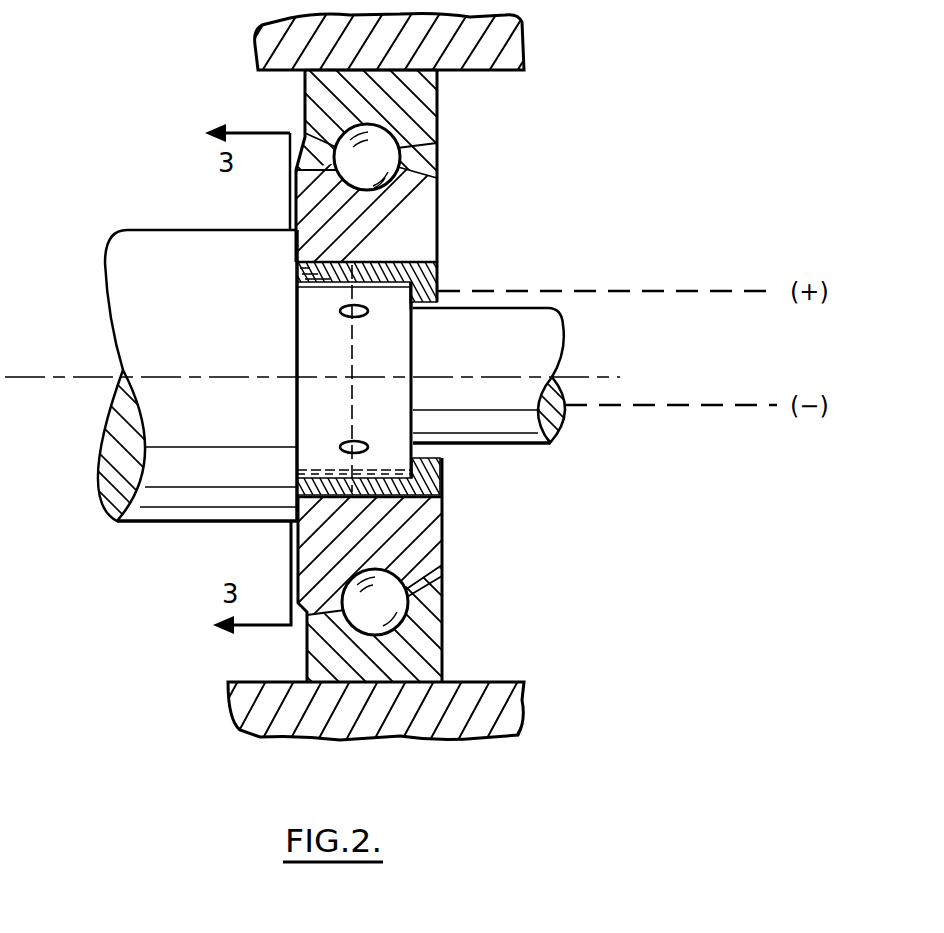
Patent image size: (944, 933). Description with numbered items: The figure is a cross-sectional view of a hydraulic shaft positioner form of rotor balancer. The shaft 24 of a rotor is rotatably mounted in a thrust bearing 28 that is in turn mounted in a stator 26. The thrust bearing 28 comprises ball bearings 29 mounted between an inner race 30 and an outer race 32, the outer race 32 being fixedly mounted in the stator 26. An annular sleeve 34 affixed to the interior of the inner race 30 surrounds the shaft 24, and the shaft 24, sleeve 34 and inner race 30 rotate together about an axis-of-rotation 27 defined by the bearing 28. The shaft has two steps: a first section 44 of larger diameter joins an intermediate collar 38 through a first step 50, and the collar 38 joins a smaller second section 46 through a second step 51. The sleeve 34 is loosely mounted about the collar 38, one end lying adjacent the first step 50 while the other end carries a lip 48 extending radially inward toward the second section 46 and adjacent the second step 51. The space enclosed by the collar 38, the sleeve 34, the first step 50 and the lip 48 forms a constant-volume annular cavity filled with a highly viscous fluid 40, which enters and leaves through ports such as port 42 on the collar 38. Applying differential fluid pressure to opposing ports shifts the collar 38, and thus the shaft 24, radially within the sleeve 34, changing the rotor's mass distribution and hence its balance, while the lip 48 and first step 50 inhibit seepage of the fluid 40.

The shaft 24 is at (190, 230).
The stator 26 is at (535, 42).
The axis-of-rotation 27 is at (72, 378).
The thrust bearing 28 is at (258, 100).
The ball bearings 29 is at (438, 150).
The inner race 30 is at (438, 233).
The outer race 32 is at (438, 120).
The annular sleeve 34 is at (438, 277).
The collar 38 is at (440, 450).
The fluid 40 is at (297, 467).
The port 42 is at (340, 312).
The first section 44 is at (167, 521).
The second section 46 is at (523, 447).
The lip 48 is at (433, 310).
The first step 50 is at (293, 250).
The second step 51 is at (413, 400).